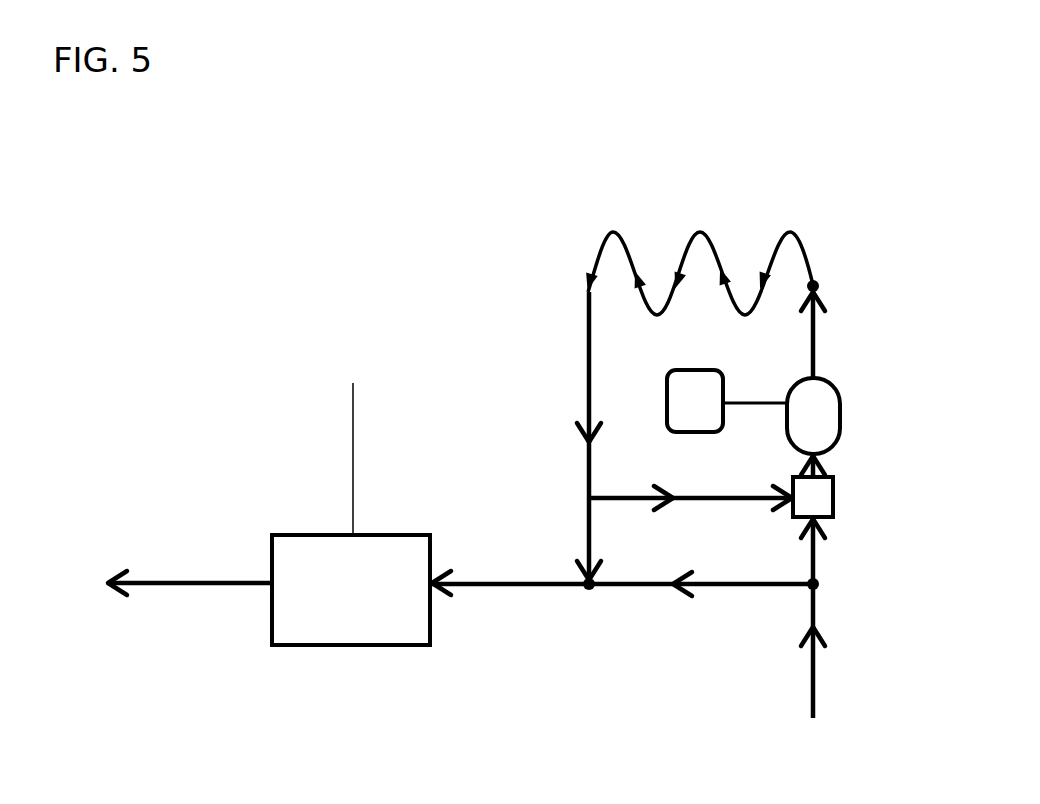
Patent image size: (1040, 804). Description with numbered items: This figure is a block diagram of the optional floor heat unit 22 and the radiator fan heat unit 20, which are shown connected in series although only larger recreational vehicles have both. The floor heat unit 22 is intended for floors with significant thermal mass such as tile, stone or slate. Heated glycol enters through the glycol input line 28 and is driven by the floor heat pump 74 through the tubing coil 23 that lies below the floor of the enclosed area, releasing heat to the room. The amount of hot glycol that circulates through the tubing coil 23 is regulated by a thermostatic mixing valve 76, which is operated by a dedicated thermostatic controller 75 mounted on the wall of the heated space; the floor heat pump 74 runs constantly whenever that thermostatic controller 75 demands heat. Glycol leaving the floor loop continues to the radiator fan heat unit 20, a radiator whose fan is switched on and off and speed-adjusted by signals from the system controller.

The radiator fan heat unit 20 is at (358, 628).
The floor heat unit 22 is at (908, 267).
The tubing coil 23 is at (715, 247).
The glycol input line 28 is at (817, 684).
The floor heat pump 74 is at (826, 398).
The thermostatic controller 75 is at (680, 382).
The thermostatic mixing valve 76 is at (834, 491).